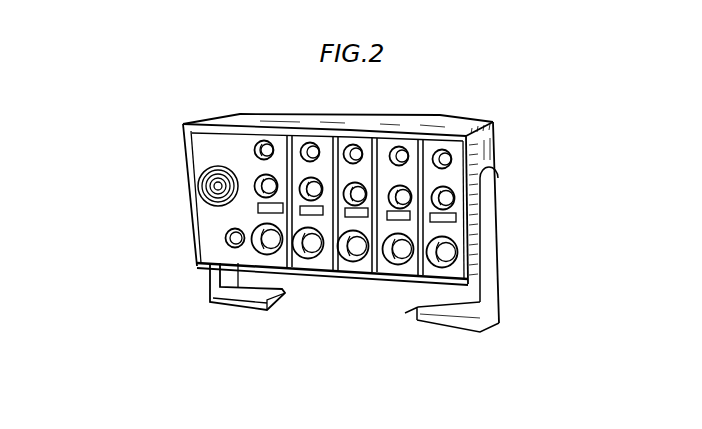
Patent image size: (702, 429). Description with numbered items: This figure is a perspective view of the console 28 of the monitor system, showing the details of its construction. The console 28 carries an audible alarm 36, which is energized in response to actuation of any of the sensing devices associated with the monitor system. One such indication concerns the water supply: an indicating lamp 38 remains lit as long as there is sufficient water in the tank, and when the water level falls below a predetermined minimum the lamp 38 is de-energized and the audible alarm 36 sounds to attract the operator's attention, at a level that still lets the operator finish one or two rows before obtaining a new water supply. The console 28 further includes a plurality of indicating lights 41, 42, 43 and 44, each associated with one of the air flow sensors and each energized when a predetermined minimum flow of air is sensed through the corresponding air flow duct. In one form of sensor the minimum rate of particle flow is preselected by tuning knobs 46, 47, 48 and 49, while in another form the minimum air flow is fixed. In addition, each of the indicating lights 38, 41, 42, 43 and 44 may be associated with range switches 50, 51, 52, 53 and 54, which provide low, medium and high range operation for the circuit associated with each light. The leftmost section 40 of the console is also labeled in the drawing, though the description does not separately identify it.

The console 28 is at (420, 96).
The audible alarm 36 is at (202, 191).
The indicating lamp 38 is at (262, 140).
The first module 40 is at (194, 266).
The indicating light 41 is at (314, 143).
The indicating light 42 is at (361, 145).
The indicating light 43 is at (407, 148).
The indicating light 44 is at (452, 155).
The tuning knob 46 is at (223, 308).
The tuning knob 47 is at (314, 258).
The tuning knob 48 is at (392, 256).
The tuning knob 49 is at (438, 260).
The range switch 50 is at (262, 176).
The range switch 51 is at (302, 190).
The range switch 52 is at (298, 268).
The range switch 53 is at (352, 258).
The range switch 54 is at (454, 197).